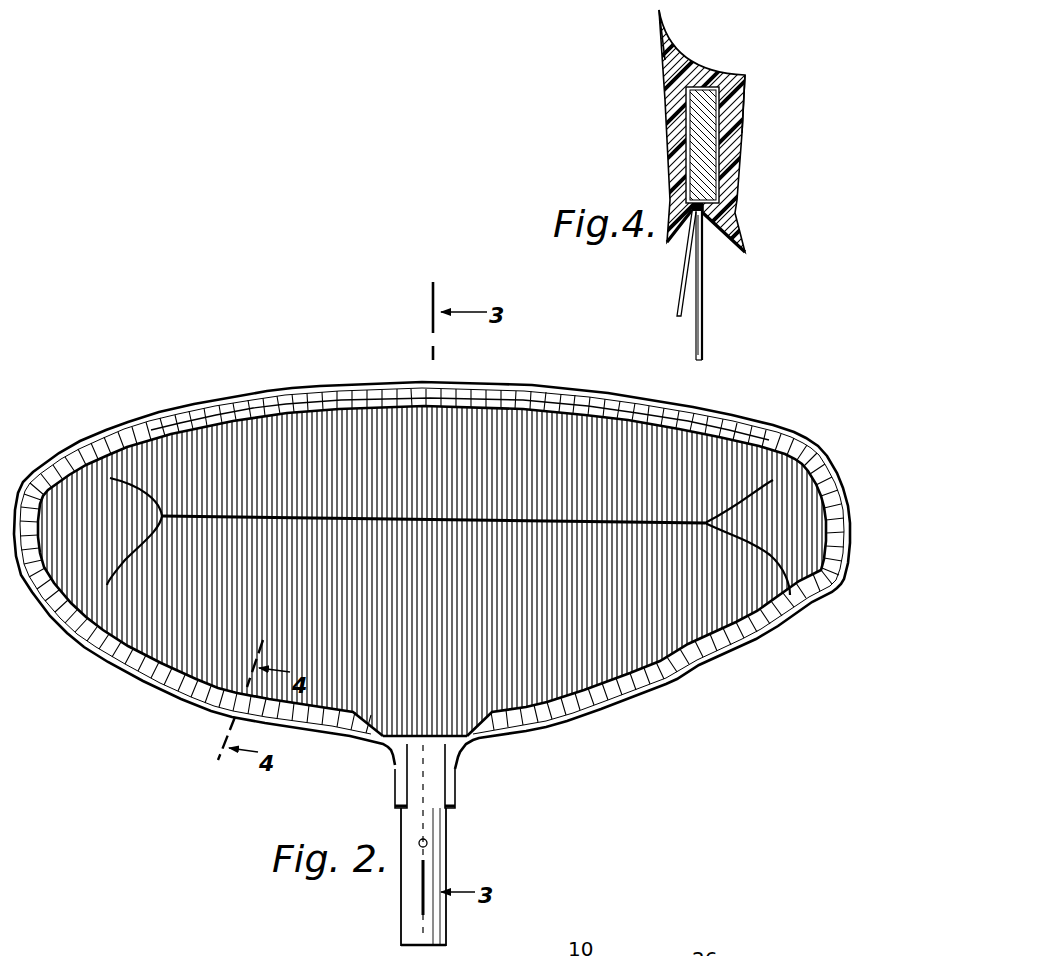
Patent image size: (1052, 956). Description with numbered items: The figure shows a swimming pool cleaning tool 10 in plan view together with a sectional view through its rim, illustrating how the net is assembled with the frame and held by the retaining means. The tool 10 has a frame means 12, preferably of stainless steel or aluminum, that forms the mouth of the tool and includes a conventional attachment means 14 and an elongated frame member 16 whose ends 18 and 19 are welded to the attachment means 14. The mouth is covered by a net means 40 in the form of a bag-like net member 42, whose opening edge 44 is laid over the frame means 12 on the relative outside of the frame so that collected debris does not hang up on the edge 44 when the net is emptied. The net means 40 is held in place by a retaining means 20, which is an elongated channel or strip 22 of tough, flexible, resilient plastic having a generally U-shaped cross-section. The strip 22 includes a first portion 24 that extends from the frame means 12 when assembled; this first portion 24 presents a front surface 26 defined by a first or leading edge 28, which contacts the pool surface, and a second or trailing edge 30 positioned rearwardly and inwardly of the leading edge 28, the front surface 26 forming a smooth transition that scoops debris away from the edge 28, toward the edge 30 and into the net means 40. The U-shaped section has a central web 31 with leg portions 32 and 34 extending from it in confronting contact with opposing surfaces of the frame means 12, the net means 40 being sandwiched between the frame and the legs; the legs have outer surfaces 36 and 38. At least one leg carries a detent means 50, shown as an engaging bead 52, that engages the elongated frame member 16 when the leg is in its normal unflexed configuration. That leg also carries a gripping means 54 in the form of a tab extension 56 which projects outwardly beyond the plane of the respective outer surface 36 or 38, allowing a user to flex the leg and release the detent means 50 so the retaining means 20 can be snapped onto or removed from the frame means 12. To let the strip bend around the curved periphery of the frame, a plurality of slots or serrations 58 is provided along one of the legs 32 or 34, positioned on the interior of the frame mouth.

In FIG. 2, the swimming pool cleaning tool 10 is at (665, 715).
In FIG. 4, the frame means 12 is at (641, 48).
In FIG. 2, the attachment means 14 is at (448, 838).
In FIG. 4, the elongated frame member 16 is at (693, 135).
In FIG. 2, the end of frame member 18 is at (397, 785).
In FIG. 2, the end of frame member 19 is at (457, 778).
In FIG. 2, the retaining means 20 is at (825, 440).
In FIG. 4, the retaining means 20 is at (743, 168).
In FIG. 2, the elongated channel or strip 22 is at (723, 673).
In FIG. 4, the elongated channel or strip 22 is at (747, 88).
In FIG. 4, the first portion 24 is at (668, 62).
In FIG. 4, the front surface 26 is at (693, 57).
In FIG. 4, the first or leading edge 28 is at (658, 12).
In FIG. 4, the second or trailing edge 30 is at (745, 77).
In FIG. 4, the central web 31 is at (703, 72).
In FIG. 4, the leg portion 32 is at (733, 118).
In FIG. 4, the leg portion 34 is at (672, 102).
In FIG. 4, the outer surface 36 is at (742, 137).
In FIG. 4, the outer surface 38 is at (665, 118).
In FIG. 2, the net means 40 is at (202, 672).
In FIG. 4, the net means 40 is at (702, 343).
In FIG. 2, the net member 42 is at (125, 650).
In FIG. 4, the net member 42 is at (703, 315).
In FIG. 4, the edge of net opening 44 is at (677, 313).
In FIG. 4, the detent means 50 is at (708, 233).
In FIG. 4, the engaging bead 52 is at (668, 190).
In FIG. 4, the gripping means 54 is at (737, 217).
In FIG. 4, the tab extension 56 is at (743, 252).
In FIG. 2, the slots or grooves or serrations 58 is at (533, 397).